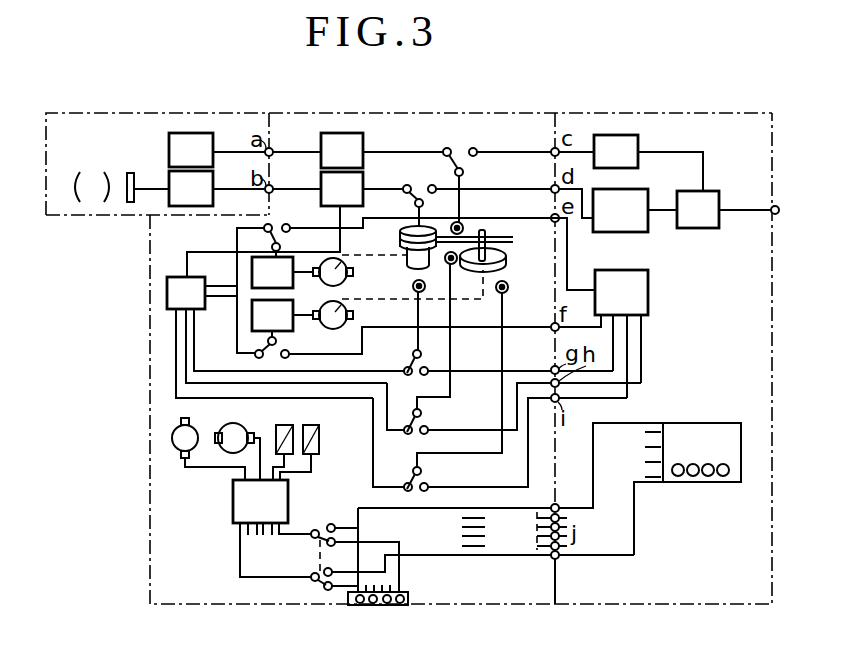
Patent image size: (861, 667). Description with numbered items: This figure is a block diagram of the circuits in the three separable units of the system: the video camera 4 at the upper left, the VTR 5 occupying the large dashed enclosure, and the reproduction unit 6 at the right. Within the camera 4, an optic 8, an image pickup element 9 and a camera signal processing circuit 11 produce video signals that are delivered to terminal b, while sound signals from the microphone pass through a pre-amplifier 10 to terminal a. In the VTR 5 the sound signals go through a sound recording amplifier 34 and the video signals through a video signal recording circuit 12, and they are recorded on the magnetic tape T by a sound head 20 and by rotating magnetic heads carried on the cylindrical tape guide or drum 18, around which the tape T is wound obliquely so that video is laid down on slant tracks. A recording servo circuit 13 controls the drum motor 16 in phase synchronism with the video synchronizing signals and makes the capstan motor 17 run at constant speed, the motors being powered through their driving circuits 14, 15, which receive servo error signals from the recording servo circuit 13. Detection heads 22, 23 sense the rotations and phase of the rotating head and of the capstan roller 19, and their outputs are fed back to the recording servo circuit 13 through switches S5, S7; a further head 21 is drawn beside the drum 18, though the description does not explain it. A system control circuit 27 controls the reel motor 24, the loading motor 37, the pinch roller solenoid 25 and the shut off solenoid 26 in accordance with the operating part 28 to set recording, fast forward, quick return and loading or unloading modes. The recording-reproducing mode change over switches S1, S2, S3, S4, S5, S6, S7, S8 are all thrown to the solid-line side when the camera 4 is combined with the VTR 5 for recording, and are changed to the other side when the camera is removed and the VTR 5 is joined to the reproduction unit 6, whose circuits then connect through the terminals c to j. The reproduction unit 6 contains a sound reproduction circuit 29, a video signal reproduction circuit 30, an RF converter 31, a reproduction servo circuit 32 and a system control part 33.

The video camera 4 is at (62, 216).
The VTR 5 is at (198, 605).
The reproduction unit 6 is at (655, 606).
The optic 8 is at (92, 203).
The image pickup element 9 is at (130, 203).
The pre-amplifier 10 is at (245, 150).
The camera signal processing circuit 11 is at (245, 188).
The video signal recording circuit 12 is at (371, 224).
The recording servo circuit 13 is at (285, 337).
The driving circuit 14 is at (282, 272).
The driving circuit 15 is at (282, 318).
The drum motor 16 is at (347, 281).
The capstan motor 17 is at (328, 328).
The cylindrical tape guide (drum) 18 is at (400, 241).
The capstan roller 19 is at (508, 262).
The sound head 20 is at (463, 227).
The contact 21 is at (449, 265).
The detection head 22 is at (413, 291).
The detection head 23 is at (508, 291).
The reel motor 24 is at (238, 424).
The pinch roller solenoid 25 is at (280, 426).
The shut off solenoid 26 is at (315, 426).
The system control circuit 27 is at (272, 528).
The operating part 28 is at (410, 599).
The sound reproduction circuit 29 is at (648, 163).
The video signal reproduction circuit 30 is at (616, 210).
The RF converter 31 is at (728, 209).
The reproduction servo circuit 32 is at (601, 308).
The system control part 33 is at (698, 424).
The sound recording amplifier 34 is at (457, 150).
The loading motor 37 is at (182, 459).
The magnetic tape T is at (509, 241).
The recording-reproducing mode change over switch S1 is at (271, 225).
The recording-reproducing mode change over switch S2 is at (256, 351).
The recording-reproducing mode change over switch S3 is at (458, 149).
The recording-reproducing mode change over switch S4 is at (431, 186).
The recording-reproducing mode change over switch S5 is at (430, 366).
The recording-reproducing mode change over switch S6 is at (430, 425).
The recording-reproducing mode change over switch S7 is at (430, 480).
The recording-reproducing mode change over switch S8 is at (322, 527).